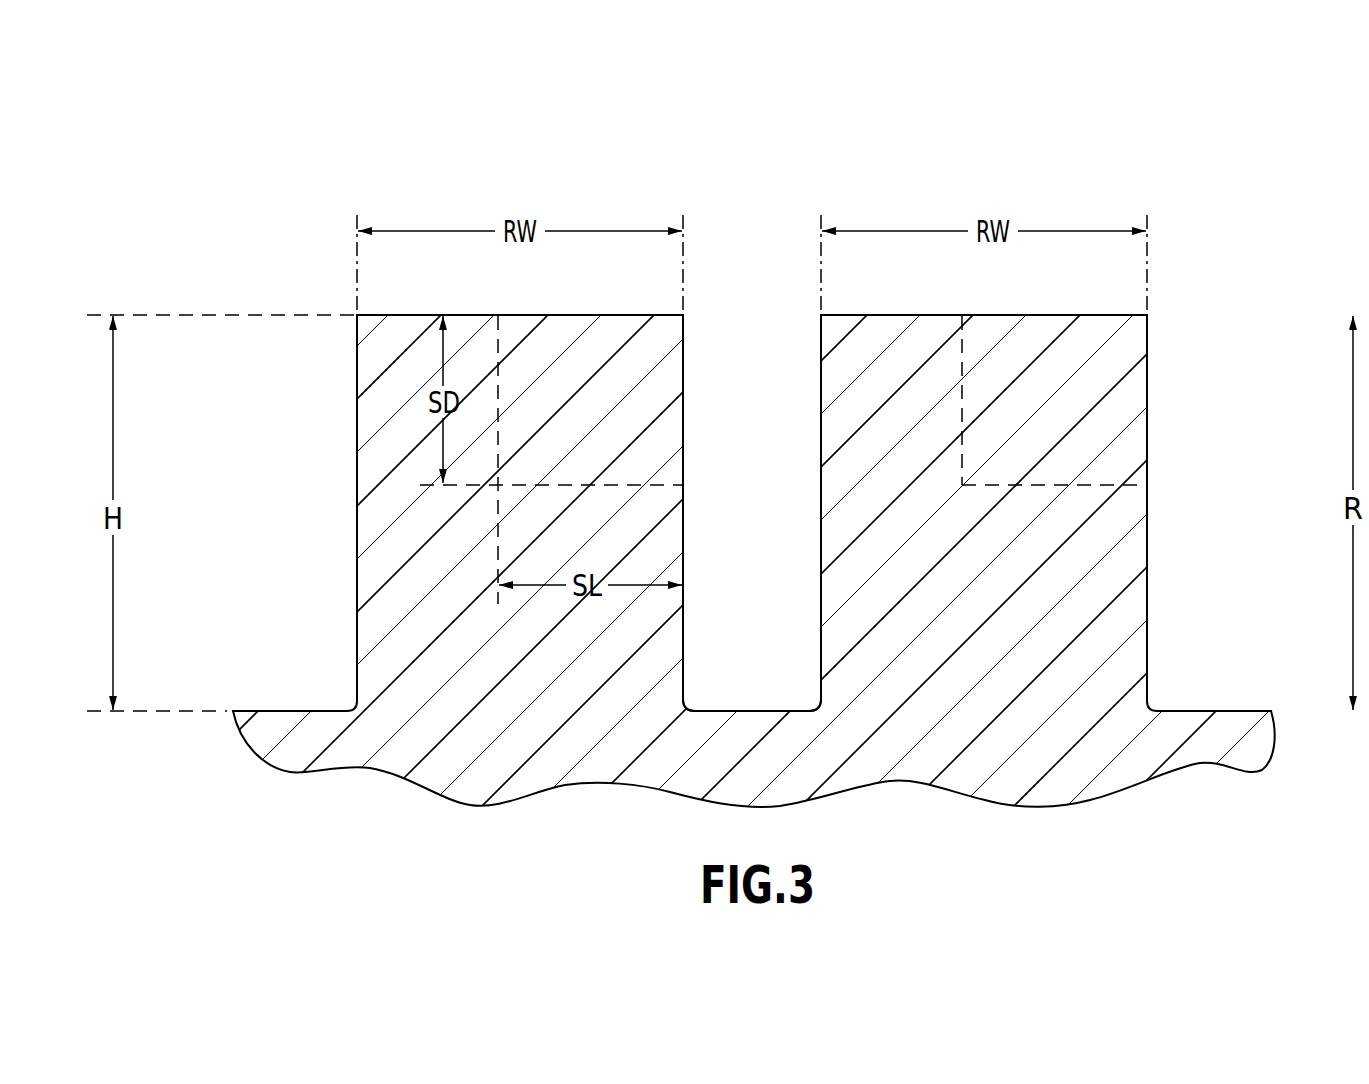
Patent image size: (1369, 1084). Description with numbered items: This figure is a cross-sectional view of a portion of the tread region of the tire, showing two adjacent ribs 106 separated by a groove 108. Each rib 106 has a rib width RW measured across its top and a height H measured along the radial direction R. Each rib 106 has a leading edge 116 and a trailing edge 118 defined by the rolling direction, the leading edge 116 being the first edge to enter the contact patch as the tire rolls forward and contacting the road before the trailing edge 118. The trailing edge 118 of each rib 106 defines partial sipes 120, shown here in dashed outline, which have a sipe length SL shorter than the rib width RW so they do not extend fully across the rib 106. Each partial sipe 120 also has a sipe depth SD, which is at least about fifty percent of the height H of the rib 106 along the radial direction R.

The rib 106 is at (393, 550).
The groove 108 is at (742, 500).
The leading edge 116 is at (355, 313).
The trailing edge 118 is at (685, 313).
The partial sipe 120 is at (500, 462).